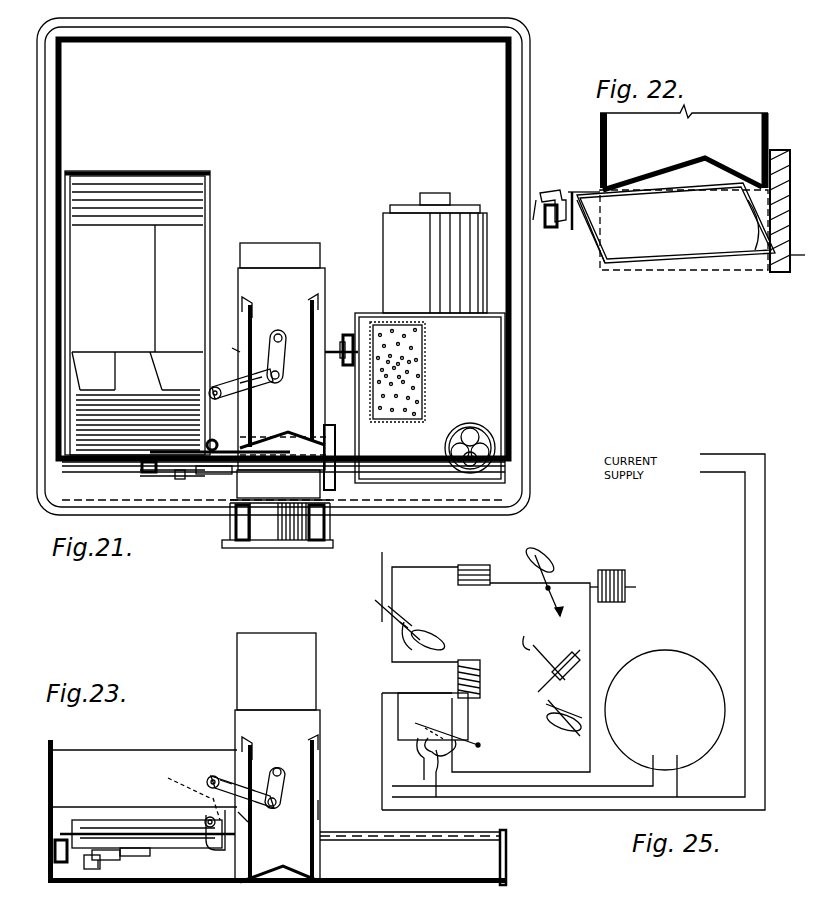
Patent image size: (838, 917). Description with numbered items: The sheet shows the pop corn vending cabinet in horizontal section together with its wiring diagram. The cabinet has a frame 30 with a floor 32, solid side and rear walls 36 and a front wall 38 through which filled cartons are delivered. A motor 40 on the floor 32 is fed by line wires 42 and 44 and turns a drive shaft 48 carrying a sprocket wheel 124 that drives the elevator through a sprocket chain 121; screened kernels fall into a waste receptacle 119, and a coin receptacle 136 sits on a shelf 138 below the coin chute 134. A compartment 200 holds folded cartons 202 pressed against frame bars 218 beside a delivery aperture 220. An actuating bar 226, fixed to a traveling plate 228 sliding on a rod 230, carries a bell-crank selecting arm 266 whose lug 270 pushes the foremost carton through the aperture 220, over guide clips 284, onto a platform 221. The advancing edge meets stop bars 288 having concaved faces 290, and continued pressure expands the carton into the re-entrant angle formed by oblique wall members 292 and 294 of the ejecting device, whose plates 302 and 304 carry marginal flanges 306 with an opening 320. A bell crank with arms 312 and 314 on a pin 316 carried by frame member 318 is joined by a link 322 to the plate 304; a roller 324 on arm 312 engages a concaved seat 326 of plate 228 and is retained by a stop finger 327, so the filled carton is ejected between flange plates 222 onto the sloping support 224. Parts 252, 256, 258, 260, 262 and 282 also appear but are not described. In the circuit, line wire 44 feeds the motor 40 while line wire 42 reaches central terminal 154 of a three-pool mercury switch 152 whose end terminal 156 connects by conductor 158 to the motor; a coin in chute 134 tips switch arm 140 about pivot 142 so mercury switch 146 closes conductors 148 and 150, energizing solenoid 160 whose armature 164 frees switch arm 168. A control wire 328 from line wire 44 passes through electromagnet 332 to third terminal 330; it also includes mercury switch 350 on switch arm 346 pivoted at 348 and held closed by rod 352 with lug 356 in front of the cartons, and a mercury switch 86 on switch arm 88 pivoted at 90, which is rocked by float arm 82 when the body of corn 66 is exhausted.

In FIG. 21, the frame 30 is at (500, 38).
In FIG. 23, the frame 30 is at (54, 883).
In FIG. 21, the floor 32 is at (272, 146).
In FIG. 21, the solid walls 36 is at (92, 44).
In FIG. 21, the front wall 38 is at (162, 505).
In FIG. 21, the motor 40 is at (435, 253).
In FIG. 25, the motor 40 is at (712, 454).
In FIG. 25, the line wire 42 is at (437, 798).
In FIG. 25, the line wire 44 is at (706, 472).
In FIG. 21, the drive shaft 48 is at (340, 356).
In FIG. 25, the body of popped corn 66 is at (521, 639).
In FIG. 25, the float arm 82 is at (548, 652).
In FIG. 25, the mercury switch 86 is at (556, 730).
In FIG. 25, the switch arm 88 is at (552, 680).
In FIG. 25, the pivot 90 is at (548, 706).
In FIG. 21, the waste receptacle 119 is at (426, 362).
In FIG. 21, the sprocket chain 121 is at (343, 342).
In FIG. 21, the sprocket wheel 124 is at (354, 334).
In FIG. 25, the coin chute 134 is at (380, 600).
In FIG. 21, the coin receptacle 136 is at (472, 423).
In FIG. 21, the shelf 138 is at (430, 398).
In FIG. 25, the switch arm 140 is at (396, 612).
In FIG. 25, the pivot point 142 is at (412, 620).
In FIG. 25, the mercury switch 146 is at (436, 632).
In FIG. 25, the conductor 148 is at (382, 760).
In FIG. 25, the conductor 150 is at (413, 614).
In FIG. 25, the three-pool mercury switch 152 is at (440, 732).
In FIG. 25, the central terminal 154 is at (432, 760).
In FIG. 25, the end terminal 156 is at (410, 759).
In FIG. 25, the conductor 158 is at (602, 786).
In FIG. 25, the solenoid coil 160 is at (480, 675).
In FIG. 25, the armature 164 is at (470, 727).
In FIG. 25, the switch arm 168 is at (424, 723).
In FIG. 21, the compartment 200 is at (146, 173).
In FIG. 21, the cartons 202 is at (137, 317).
In FIG. 22, the cartons 202 is at (672, 264).
In FIG. 25, the cartons 202 is at (624, 576).
In FIG. 21, the frame bars 218 is at (98, 460).
In FIG. 21, the delivery aperture 220 is at (214, 440).
In FIG. 21, the platform 221 is at (278, 484).
In FIG. 23, the platform 221 is at (276, 671).
In FIG. 21, the flange plates 222 is at (234, 525).
In FIG. 21, the sloping support member 224 is at (262, 540).
In FIG. 21, the actuating bar 226 is at (146, 474).
In FIG. 22, the actuating bar 226 is at (552, 228).
In FIG. 23, the actuating bar 226 is at (54, 856).
In FIG. 21, the traveling plate 228 is at (330, 425).
In FIG. 23, the traveling plate 228 is at (118, 826).
In FIG. 21, the rod 230 is at (358, 458).
In FIG. 23, the rod 230 is at (460, 843).
In FIG. 23, the latch 252 is at (92, 870).
In FIG. 21, the lug 256 is at (182, 482).
In FIG. 23, the latch spring 258 is at (108, 866).
In FIG. 23, the latch member 260 is at (120, 854).
In FIG. 23, the guide 262 is at (148, 852).
In FIG. 22, the selecting arm 266 is at (552, 192).
In FIG. 21, the lug 270 is at (230, 476).
In FIG. 22, the lug 270 is at (574, 192).
In FIG. 21, the carriage 282 is at (162, 478).
In FIG. 22, the carriage 282 is at (590, 238).
In FIG. 23, the carriage 282 is at (147, 820).
In FIG. 21, the guide clips 284 is at (240, 450).
In FIG. 22, the stop bars 288 is at (778, 272).
In FIG. 21, the concaved face 290 is at (316, 458).
In FIG. 22, the concaved face 290 is at (760, 212).
In FIG. 21, the oblique wall member 292 is at (285, 430).
In FIG. 22, the oblique wall member 292 is at (678, 170).
In FIG. 23, the oblique wall member 292 is at (278, 869).
In FIG. 21, the oblique wall member 294 is at (305, 437).
In FIG. 22, the oblique wall member 294 is at (740, 175).
In FIG. 23, the oblique wall member 294 is at (298, 874).
In FIG. 21, the upper plate 302 is at (281, 369).
In FIG. 23, the upper plate 302 is at (281, 810).
In FIG. 21, the plate member 304 is at (280, 255).
In FIG. 23, the plate member 304 is at (277, 789).
In FIG. 21, the marginal flanges 306 is at (250, 338).
In FIG. 23, the marginal flanges 306 is at (252, 772).
In FIG. 23, the forwardly extending arm 312 is at (183, 797).
In FIG. 21, the laterally extending arm 314 is at (248, 388).
In FIG. 23, the laterally extending arm 314 is at (226, 780).
In FIG. 21, the post 316 is at (215, 387).
In FIG. 23, the post 316 is at (207, 782).
In FIG. 23, the horizontal frame member 318 is at (145, 778).
In FIG. 21, the opening 320 is at (227, 341).
In FIG. 23, the opening 320 is at (318, 812).
In FIG. 21, the link 322 is at (282, 340).
In FIG. 23, the link 322 is at (286, 788).
In FIG. 23, the roller 324 is at (205, 814).
In FIG. 23, the concaved seat 326 is at (204, 820).
In FIG. 23, the stop finger 327 is at (242, 822).
In FIG. 25, the control circuit wire 328 is at (414, 567).
In FIG. 25, the third terminal 330 is at (458, 756).
In FIG. 25, the electromagnet 332 is at (478, 565).
In FIG. 25, the switch arm 346 is at (546, 592).
In FIG. 25, the pivot 348 is at (566, 602).
In FIG. 25, the mercury switch 350 is at (548, 562).
In FIG. 25, the rod 352 is at (593, 590).
In FIG. 25, the lug 356 is at (626, 592).